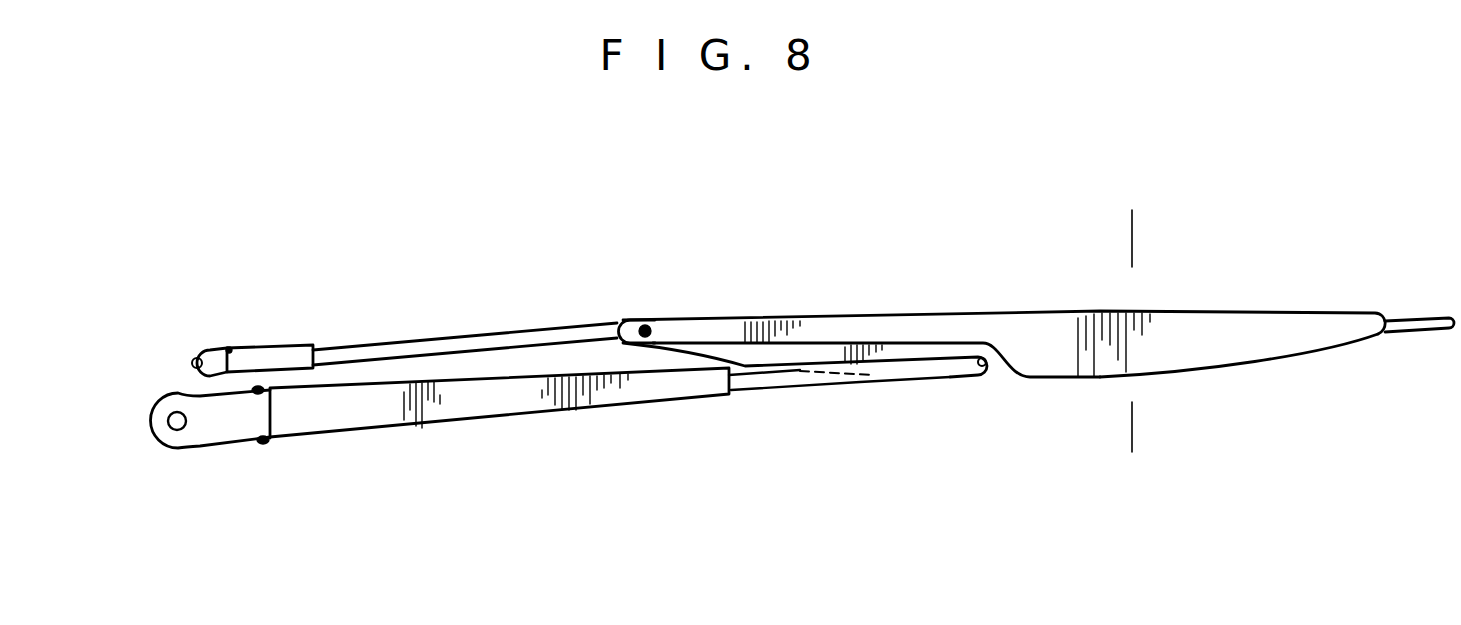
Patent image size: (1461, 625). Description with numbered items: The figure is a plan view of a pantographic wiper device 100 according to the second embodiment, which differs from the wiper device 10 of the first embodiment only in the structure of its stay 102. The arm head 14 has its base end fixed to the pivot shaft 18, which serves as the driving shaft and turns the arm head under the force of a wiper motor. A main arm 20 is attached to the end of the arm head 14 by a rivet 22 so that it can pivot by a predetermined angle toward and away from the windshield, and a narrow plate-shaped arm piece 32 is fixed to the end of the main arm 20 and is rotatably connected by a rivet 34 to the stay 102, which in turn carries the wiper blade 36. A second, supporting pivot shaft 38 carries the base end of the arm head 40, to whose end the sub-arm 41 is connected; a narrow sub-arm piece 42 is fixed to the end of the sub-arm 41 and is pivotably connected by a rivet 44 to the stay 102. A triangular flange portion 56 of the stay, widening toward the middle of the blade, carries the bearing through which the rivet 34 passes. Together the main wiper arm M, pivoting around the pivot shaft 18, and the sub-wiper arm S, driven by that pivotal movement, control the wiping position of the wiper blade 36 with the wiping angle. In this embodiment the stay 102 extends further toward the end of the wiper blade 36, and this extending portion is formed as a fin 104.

The wiper device 10 is at (1140, 428).
The arm head 14 is at (233, 426).
The pivot shaft 18 is at (177, 431).
The main arm 20 is at (518, 403).
The rivet 22 is at (263, 444).
The arm piece 32 is at (900, 368).
The rivet 34 is at (985, 368).
The wiper blade 36 is at (1422, 312).
The pivot shaft 38 is at (193, 356).
The arm head 40 is at (213, 350).
The sub-arm 41 is at (280, 352).
The sub-arm piece 42 is at (435, 345).
The rivet 44 is at (650, 321).
The flange portion 56 is at (817, 353).
The wiper device 100 is at (1004, 285).
The stay 102 is at (912, 322).
The fin 104 is at (1213, 352).
The sub-wiper arm S is at (546, 306).
The main wiper arm M is at (585, 430).